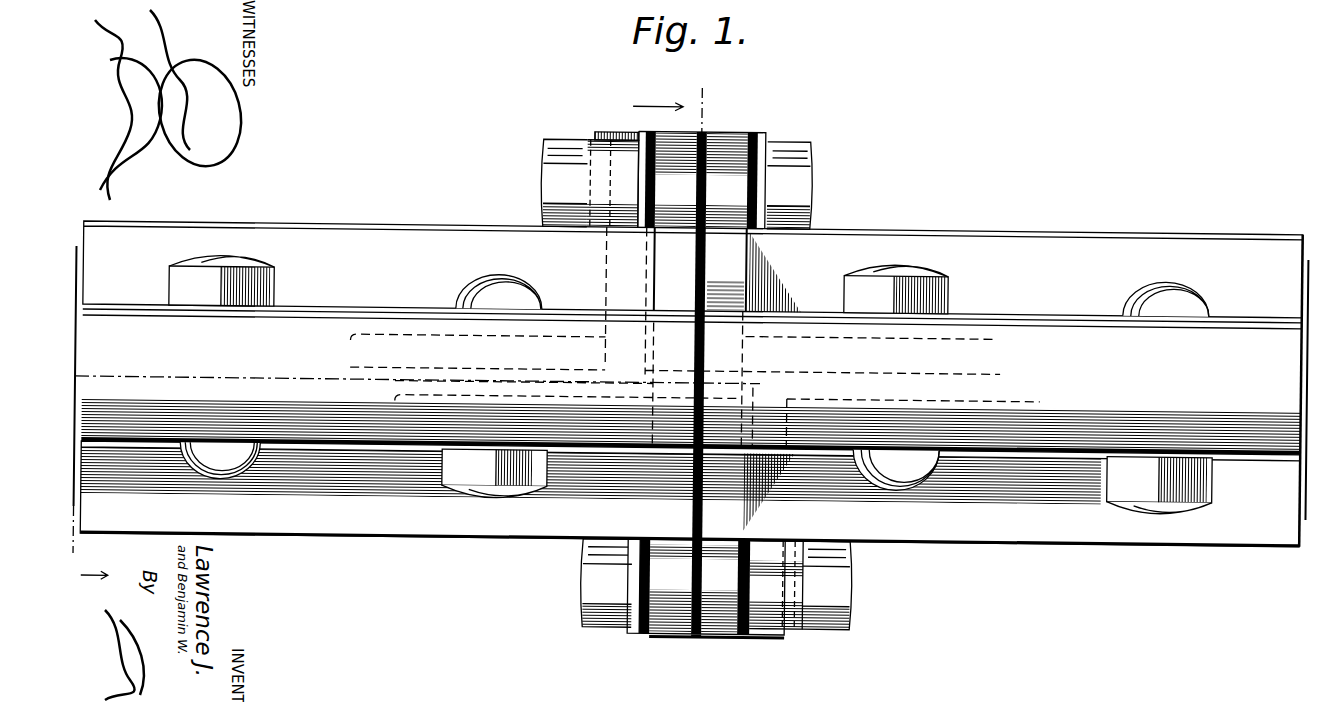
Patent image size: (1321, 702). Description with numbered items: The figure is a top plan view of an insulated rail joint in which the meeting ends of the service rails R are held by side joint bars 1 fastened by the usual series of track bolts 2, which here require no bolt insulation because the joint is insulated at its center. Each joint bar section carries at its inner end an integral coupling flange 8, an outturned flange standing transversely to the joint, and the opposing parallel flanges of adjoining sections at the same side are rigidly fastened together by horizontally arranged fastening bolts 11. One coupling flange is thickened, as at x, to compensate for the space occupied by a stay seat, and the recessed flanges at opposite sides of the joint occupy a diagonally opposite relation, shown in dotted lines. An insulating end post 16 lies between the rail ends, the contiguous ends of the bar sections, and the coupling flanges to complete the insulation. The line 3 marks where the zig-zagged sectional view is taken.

The side joint bars 1 is at (691, 384).
The track bolts 2 is at (262, 270).
The coupling flange 8 is at (715, 384).
The fastening bolts 11 is at (541, 180).
The insulating end post 16 is at (698, 648).
The section line 3— 3 is at (390, 320).
The service rails R is at (719, 338).
The thickened portion of coupling flange x is at (624, 126).